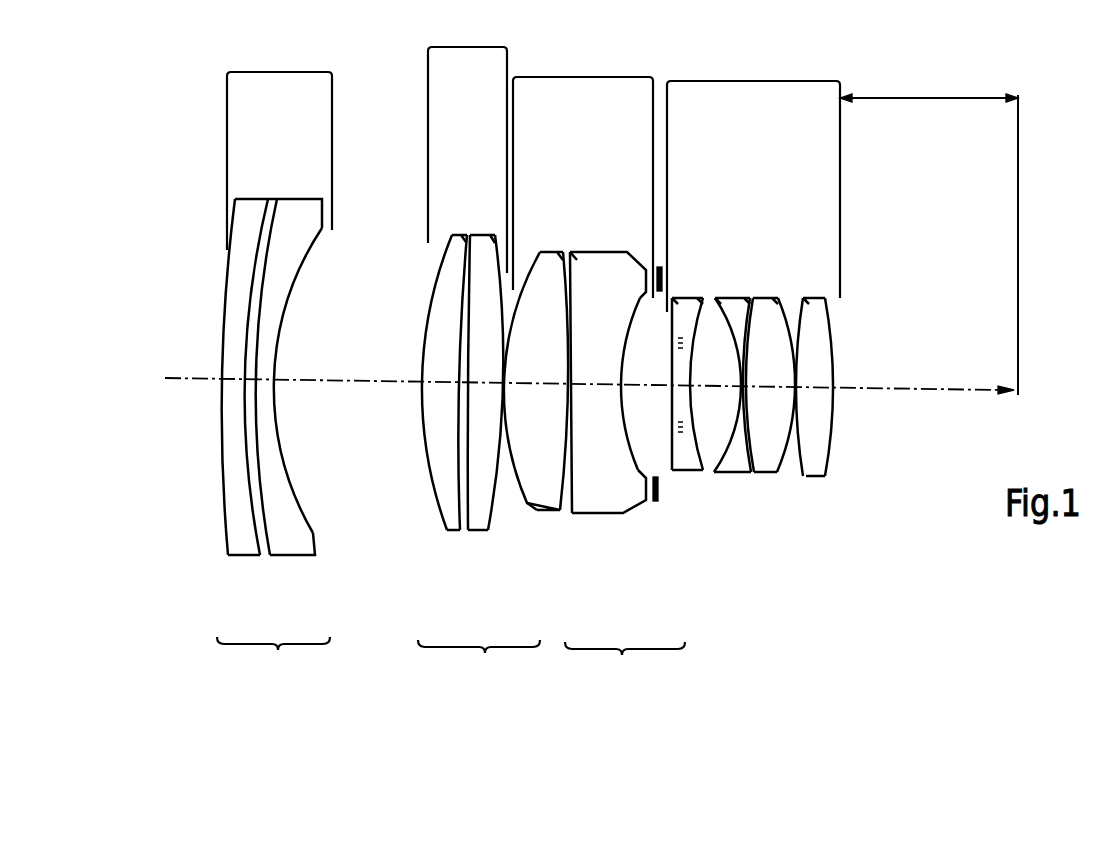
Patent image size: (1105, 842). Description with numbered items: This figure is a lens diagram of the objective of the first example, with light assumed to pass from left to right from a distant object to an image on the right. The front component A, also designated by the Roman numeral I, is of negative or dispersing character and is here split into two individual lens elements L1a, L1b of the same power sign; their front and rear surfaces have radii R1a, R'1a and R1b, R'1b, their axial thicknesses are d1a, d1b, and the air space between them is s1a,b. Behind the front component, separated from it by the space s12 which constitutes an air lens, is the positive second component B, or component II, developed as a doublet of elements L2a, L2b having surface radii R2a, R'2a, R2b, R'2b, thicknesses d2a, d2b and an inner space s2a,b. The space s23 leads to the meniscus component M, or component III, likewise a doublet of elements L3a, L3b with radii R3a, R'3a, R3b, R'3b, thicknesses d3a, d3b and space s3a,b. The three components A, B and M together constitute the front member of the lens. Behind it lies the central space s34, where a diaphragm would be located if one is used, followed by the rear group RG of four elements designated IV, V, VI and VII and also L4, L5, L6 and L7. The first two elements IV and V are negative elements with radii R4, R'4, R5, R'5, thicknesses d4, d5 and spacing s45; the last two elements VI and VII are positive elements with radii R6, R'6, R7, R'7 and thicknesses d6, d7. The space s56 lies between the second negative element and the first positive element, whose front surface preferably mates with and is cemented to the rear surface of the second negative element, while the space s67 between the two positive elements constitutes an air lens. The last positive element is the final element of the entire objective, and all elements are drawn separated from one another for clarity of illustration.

The front component A is at (279, 155).
The second component B is at (467, 154).
The meniscus component M is at (583, 182).
The rear group RG is at (753, 192).
The front component I is at (282, 684).
The second component II is at (496, 685).
The meniscus component III is at (636, 687).
The first negative element of rear group IV is at (683, 597).
The second negative element of rear group V is at (758, 598).
The first positive element of rear group VI is at (842, 598).
The second positive element of rear group VII is at (915, 598).
The first lens element of front component L1a is at (223, 372).
The second lens element of front component L1b is at (311, 375).
The first lens element of second component L2a is at (422, 392).
The second lens element of second component L2b is at (481, 357).
The first lens element of meniscus component L3a is at (555, 379).
The second lens element of meniscus component L3b is at (623, 382).
The fourth lens element L4 is at (671, 378).
The fifth lens element L5 is at (733, 388).
The sixth lens element L6 is at (800, 367).
The seventh lens element L7 is at (863, 387).
The front surface radius of first front element R1a is at (205, 363).
The rear surface radius of first front element R'1a is at (263, 331).
The front surface radius of second front element R1b is at (295, 334).
The rear surface radius of second front element R'1b is at (320, 380).
The front surface radius of first second-component element R2a is at (410, 338).
The rear surface radius of first second-component element R'2a is at (456, 342).
The front surface radius of second second-component element R2b is at (458, 322).
The rear surface radius of second second-component element R'2b is at (469, 303).
The front surface radius of first meniscus element R3a is at (531, 342).
The rear surface radius of first meniscus element R'3a is at (543, 314).
The front surface radius of second meniscus element R3b is at (598, 318).
The rear surface radius of second meniscus element R'3b is at (625, 321).
The front surface radius of fourth element R4 is at (690, 345).
The rear surface radius of fourth element R'4 is at (693, 315).
The front surface radius of fifth element R5 is at (733, 350).
The rear surface radius of fifth element R'5 is at (754, 325).
The front surface radius of sixth element R6 is at (769, 304).
The rear surface radius of sixth element R'6 is at (794, 342).
The front surface radius of seventh element R7 is at (814, 326).
The rear surface radius of seventh element R'7 is at (852, 346).
The axial thickness of first front element d1a is at (196, 351).
The axial thickness of second front element d1b is at (258, 376).
The axial thickness of first second-component element d2a is at (438, 393).
The axial thickness of second second-component element d2b is at (485, 393).
The axial thickness of first meniscus element d3a is at (539, 386).
The axial thickness of second meniscus element d3b is at (602, 386).
The axial thickness of fourth element d4 is at (661, 363).
The axial thickness of fifth element d5 is at (718, 365).
The axial thickness of sixth element d6 is at (766, 392).
The axial thickness of seventh element d7 is at (816, 391).
The space between first and second front elements s1a,b is at (256, 396).
The space between front and second components s12 is at (370, 385).
The space between second-component elements s2a,b is at (462, 425).
The space between second and meniscus components s23 is at (510, 480).
The space between meniscus-component elements s3a,b is at (565, 401).
The central space s34 is at (643, 388).
The space between fourth and fifth elements s45 is at (708, 470).
The space between fifth and sixth elements s56 is at (768, 472).
The space between sixth and seventh elements s67 is at (795, 475).